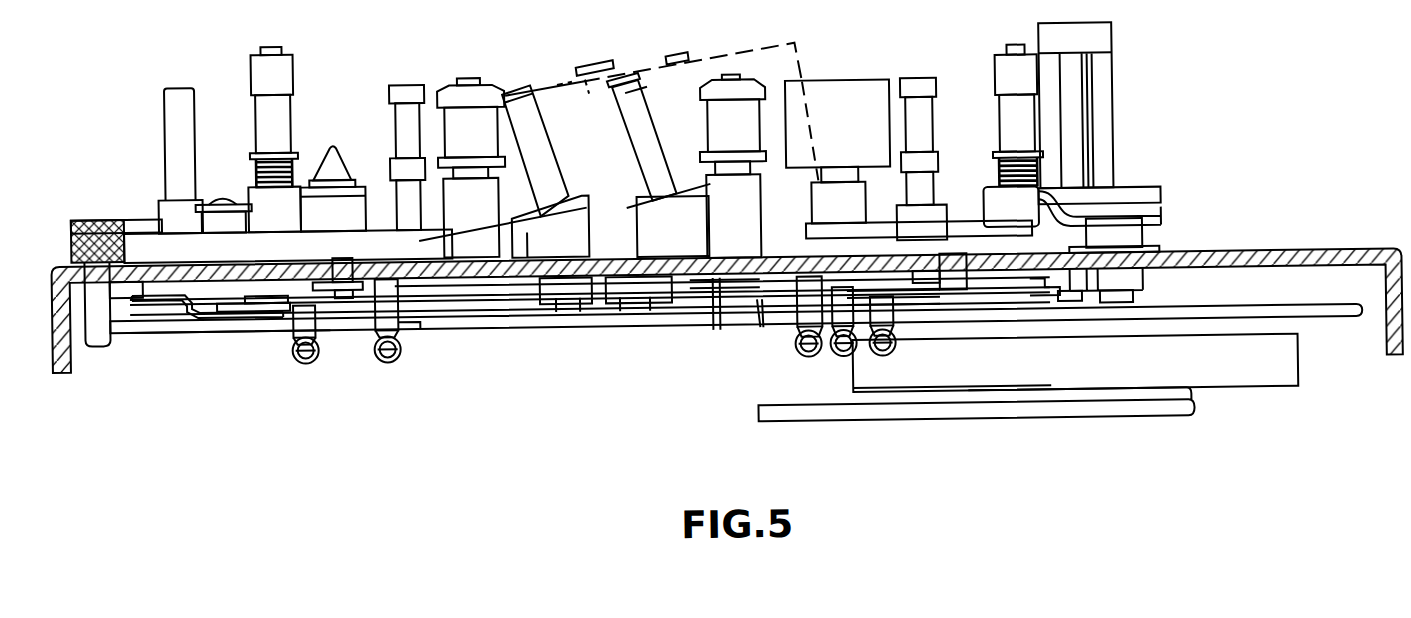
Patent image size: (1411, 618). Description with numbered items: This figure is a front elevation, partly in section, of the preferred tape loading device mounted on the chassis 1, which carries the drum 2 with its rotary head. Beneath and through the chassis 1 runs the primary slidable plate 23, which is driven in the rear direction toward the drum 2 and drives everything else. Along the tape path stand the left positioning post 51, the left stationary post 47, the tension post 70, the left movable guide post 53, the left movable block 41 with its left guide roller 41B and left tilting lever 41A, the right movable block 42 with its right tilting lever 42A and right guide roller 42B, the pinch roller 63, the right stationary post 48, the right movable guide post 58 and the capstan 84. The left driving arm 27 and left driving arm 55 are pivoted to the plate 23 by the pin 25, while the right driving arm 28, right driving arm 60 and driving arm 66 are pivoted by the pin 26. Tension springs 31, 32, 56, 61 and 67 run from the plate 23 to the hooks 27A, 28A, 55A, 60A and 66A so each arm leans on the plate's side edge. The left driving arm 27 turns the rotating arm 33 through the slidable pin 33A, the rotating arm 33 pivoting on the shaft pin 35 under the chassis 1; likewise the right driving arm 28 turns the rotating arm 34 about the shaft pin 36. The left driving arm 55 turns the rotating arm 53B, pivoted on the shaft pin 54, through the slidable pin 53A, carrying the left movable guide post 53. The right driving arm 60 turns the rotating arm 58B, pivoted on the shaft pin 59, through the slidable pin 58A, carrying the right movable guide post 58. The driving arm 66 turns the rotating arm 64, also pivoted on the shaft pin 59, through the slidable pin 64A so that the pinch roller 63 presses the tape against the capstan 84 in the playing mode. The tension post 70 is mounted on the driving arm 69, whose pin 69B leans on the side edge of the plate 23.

The chassis 1 is at (51, 278).
The drum 2 is at (585, 63).
The primary slidable plate 23 is at (450, 319).
The pin 25 is at (563, 335).
The pin 26 is at (642, 336).
The left driving arm 27 is at (328, 302).
The hook 27A is at (291, 317).
The right driving arm 28 is at (677, 298).
The hook 28A is at (890, 323).
The tension spring 31 is at (308, 352).
The tension spring 32 is at (885, 360).
The rotating arm 33 is at (131, 314).
The slidable pin 33A is at (258, 291).
The rotating arm 34 is at (1040, 300).
The shaft pin 35 is at (152, 300).
The shaft pin 36 is at (1068, 302).
The left movable block 41 is at (578, 194).
The left tilting lever 41A is at (532, 125).
The left guide roller 41B is at (472, 125).
The right movable block 42 is at (687, 192).
The right tilting lever 42A is at (640, 100).
The right guide roller 42B is at (733, 127).
The left stationary post 47 is at (267, 115).
The right stationary post 48 is at (1010, 141).
The left positioning post 51 is at (318, 160).
The left movable guide post 53 is at (398, 117).
The slidable pin 53A is at (350, 260).
The rotating arm 53B is at (380, 236).
The shaft pin 54 is at (217, 190).
The left driving arm 55 is at (467, 284).
The hook 55A is at (418, 318).
The tension spring 56 is at (385, 355).
The right movable guide post 58 is at (930, 118).
The slidable pin 58A is at (945, 277).
The rotating arm 58B is at (1158, 225).
The shaft pin 59 is at (1117, 302).
The right driving arm 60 is at (704, 290).
The hook 60A is at (846, 318).
The tension spring 61 is at (845, 354).
The pinch roller 63 is at (838, 89).
The rotating arm 64 is at (1137, 196).
The slidable pin 64A is at (887, 319).
The driving arm 66 is at (713, 278).
The hook 66A is at (805, 310).
The tension spring 67 is at (808, 354).
The driving arm 69 is at (75, 222).
The pin 69B is at (91, 326).
The tension post 70 is at (170, 120).
The capstan 84 is at (1078, 88).